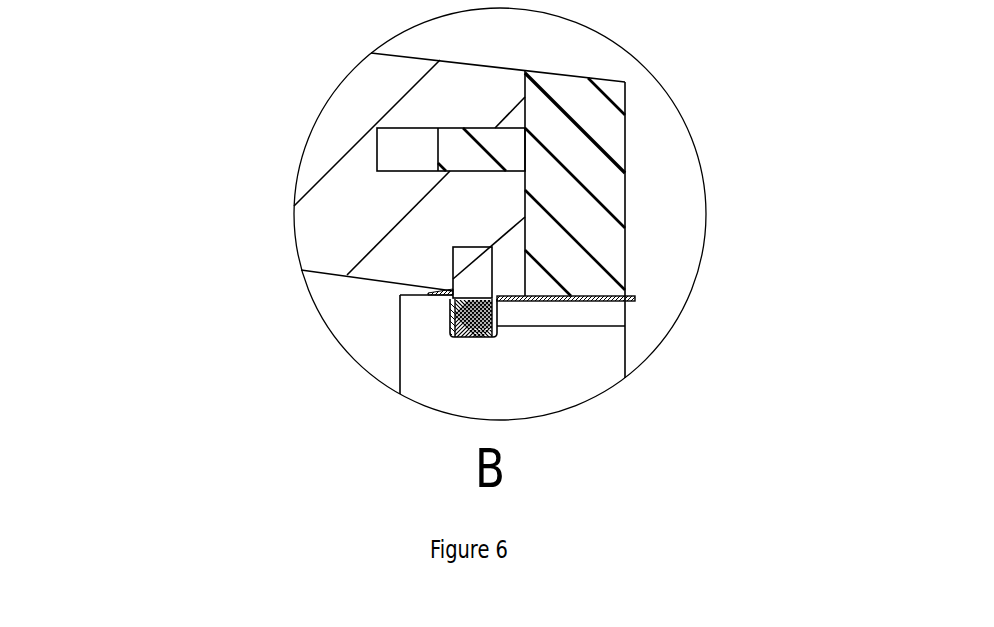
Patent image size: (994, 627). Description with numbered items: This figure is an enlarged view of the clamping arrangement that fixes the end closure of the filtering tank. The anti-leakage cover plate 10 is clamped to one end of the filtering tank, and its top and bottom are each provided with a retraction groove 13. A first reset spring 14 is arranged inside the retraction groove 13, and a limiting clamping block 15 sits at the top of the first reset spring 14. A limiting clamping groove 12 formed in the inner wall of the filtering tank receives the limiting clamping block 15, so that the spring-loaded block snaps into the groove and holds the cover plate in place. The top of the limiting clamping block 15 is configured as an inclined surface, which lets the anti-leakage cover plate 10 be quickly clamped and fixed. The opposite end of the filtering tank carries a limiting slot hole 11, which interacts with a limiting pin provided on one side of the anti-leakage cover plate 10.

The anti-leakage cover plate 10 is at (592, 188).
The limiting slot hole 11 is at (385, 150).
The limiting clamping groove 12 is at (455, 255).
The retraction groove 13 is at (497, 332).
The first reset spring 14 is at (448, 322).
The limiting clamping block 15 is at (468, 288).